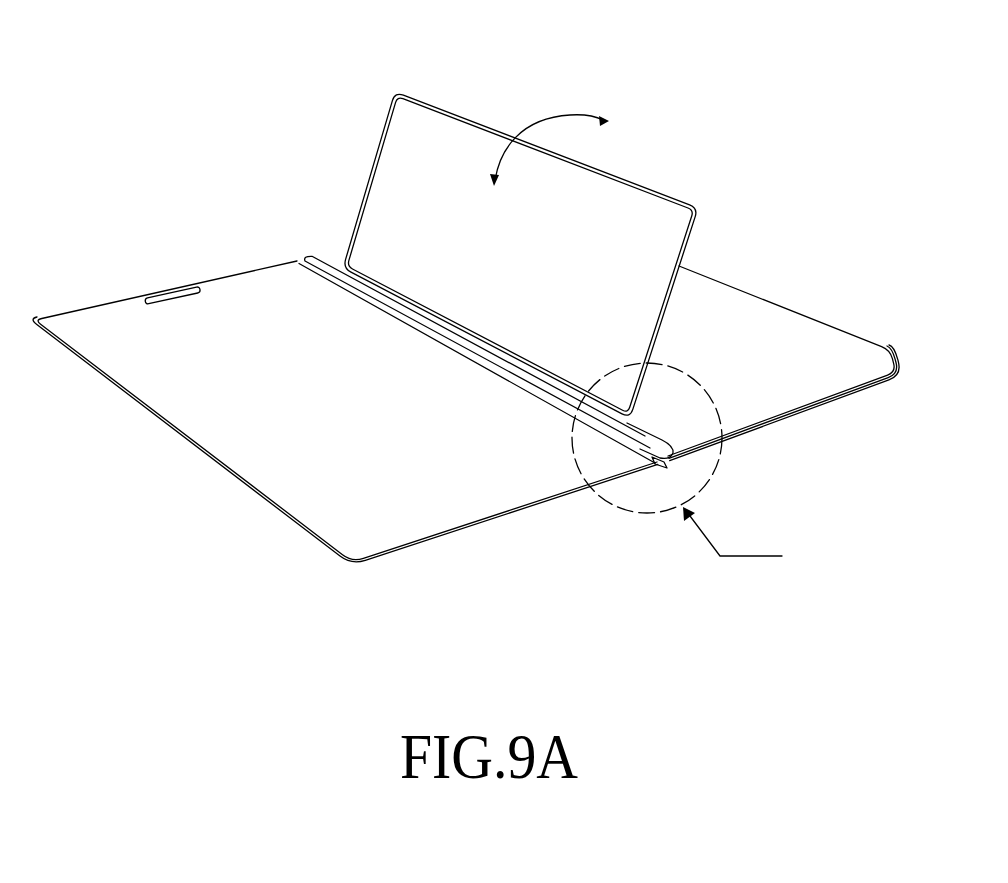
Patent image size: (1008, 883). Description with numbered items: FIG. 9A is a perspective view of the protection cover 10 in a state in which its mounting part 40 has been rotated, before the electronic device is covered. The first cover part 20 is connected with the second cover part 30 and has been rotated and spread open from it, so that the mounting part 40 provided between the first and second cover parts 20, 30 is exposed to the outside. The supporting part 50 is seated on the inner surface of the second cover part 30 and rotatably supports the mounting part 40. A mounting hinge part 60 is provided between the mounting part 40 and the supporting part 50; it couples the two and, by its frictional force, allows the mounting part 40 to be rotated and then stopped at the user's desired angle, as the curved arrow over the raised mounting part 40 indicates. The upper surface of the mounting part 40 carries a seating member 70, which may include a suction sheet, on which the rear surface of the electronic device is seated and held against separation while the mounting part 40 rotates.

The protection cover 10 is at (133, 82).
The first cover part 20 is at (118, 315).
The second cover part 30 is at (808, 408).
The mounting part 40 is at (698, 236).
The supporting part 50 is at (787, 340).
The mounting hinge part 60 is at (311, 249).
The seating member 70 is at (620, 198).